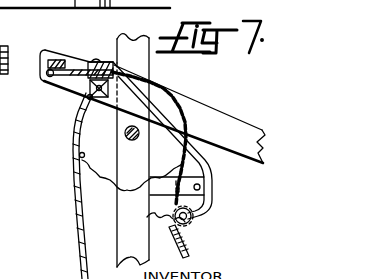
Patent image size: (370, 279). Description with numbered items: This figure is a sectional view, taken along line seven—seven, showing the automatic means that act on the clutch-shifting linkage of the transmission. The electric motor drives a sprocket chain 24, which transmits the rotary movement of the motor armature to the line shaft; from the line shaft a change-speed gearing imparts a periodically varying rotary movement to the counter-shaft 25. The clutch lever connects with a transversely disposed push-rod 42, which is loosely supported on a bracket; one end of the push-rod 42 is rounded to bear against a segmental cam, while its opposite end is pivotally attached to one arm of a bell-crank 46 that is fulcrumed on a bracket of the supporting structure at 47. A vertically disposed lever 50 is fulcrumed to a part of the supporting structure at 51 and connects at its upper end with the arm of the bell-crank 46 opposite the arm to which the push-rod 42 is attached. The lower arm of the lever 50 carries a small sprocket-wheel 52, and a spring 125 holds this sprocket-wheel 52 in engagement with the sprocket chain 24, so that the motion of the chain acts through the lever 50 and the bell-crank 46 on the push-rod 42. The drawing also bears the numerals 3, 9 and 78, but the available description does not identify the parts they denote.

The frame member (partial) 3 is at (6, 111).
The frame member (partial) 9 is at (8, 171).
The sprocket chain 24 is at (78, 237).
The counter-shaft 25 is at (140, 131).
The push-rod 42 is at (56, 102).
The bell-crank 46 is at (73, 99).
The bell-crank fulcrum 47 is at (97, 60).
The lever 50 is at (143, 108).
The lever fulcrum 51 is at (210, 182).
The sprocket-wheel 52 is at (197, 220).
The side bracket 78 is at (9, 56).
The spring 125 is at (154, 218).